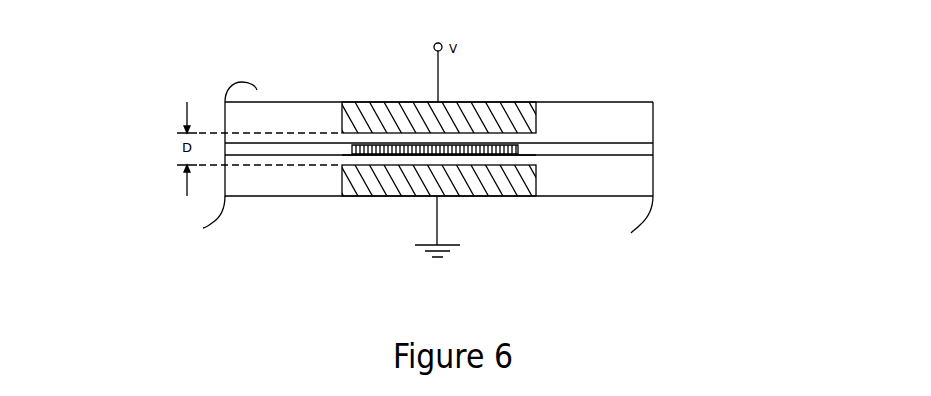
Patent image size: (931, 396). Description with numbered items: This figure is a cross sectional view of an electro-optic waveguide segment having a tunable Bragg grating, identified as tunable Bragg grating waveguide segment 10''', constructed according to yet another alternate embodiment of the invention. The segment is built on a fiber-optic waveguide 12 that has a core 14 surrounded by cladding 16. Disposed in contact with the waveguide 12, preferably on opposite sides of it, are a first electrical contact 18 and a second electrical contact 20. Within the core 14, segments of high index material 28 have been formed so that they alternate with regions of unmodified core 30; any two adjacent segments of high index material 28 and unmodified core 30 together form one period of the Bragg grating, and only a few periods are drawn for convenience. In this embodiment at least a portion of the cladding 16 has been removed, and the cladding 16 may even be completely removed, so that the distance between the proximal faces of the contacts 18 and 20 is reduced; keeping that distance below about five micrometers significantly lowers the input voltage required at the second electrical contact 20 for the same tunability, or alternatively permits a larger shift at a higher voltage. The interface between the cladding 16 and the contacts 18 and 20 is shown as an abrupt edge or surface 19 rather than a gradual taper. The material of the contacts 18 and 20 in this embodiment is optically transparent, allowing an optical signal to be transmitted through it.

The tunable Bragg grating waveguide segment 10''' is at (349, 62).
The fiber-optic waveguide 12 is at (695, 92).
The core 14 is at (653, 147).
The cladding 16 is at (627, 196).
The first electrical contact 18 is at (493, 196).
The surface 19 is at (532, 196).
The second electrical contact 20 is at (518, 102).
The segments of high index material 28 is at (354, 157).
The unmodified core 30 is at (352, 151).